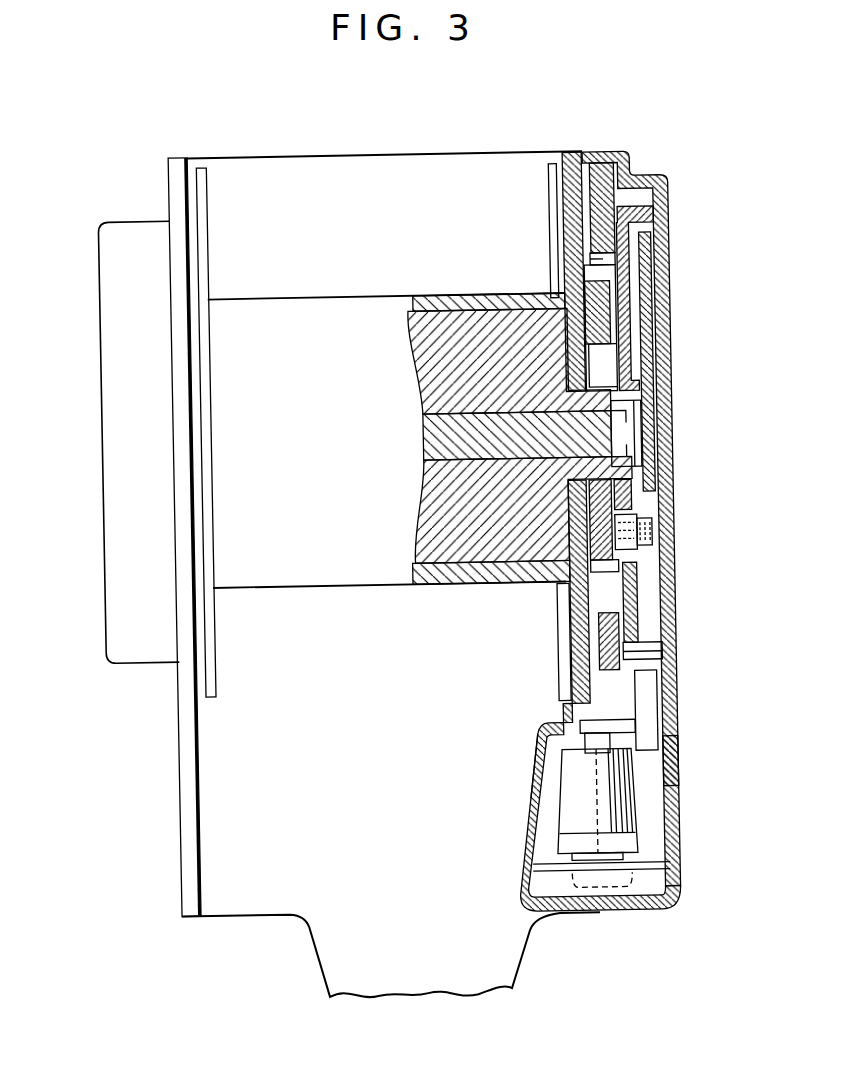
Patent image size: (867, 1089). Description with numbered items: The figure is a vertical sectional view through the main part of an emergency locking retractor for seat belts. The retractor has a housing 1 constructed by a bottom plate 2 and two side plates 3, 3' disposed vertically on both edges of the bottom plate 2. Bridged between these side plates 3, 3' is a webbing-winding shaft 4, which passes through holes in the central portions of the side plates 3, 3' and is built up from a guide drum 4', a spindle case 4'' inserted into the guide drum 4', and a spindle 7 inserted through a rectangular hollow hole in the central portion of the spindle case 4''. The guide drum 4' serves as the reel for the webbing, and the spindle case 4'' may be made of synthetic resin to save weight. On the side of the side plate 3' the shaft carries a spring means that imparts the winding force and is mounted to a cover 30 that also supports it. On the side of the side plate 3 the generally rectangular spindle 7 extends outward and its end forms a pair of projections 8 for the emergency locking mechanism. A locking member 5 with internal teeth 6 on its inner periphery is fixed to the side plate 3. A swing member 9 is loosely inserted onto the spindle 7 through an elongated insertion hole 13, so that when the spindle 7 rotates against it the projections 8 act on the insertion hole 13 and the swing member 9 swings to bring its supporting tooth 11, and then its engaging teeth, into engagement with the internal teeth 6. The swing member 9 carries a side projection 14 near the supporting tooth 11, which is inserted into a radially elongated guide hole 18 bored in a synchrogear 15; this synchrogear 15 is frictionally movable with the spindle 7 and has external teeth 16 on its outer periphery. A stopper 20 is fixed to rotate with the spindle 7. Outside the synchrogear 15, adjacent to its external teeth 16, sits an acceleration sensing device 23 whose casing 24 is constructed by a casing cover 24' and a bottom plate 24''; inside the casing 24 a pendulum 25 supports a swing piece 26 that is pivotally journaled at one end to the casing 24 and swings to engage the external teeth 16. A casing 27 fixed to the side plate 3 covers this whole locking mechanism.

The housing 1 is at (245, 152).
The bottom plate 2 is at (351, 153).
The side plate 3 is at (566, 252).
The side plate 3' is at (190, 405).
The webbing-winding shaft 4 is at (388, 419).
The guide drum 4' is at (488, 282).
The spindle case 4'' is at (509, 334).
The locking member 5 is at (612, 168).
The internal teeth 6 is at (600, 257).
The spindle 7 is at (592, 441).
The projections 8 is at (575, 535).
The swing member 9 is at (624, 306).
The supporting tooth 11 is at (572, 580).
The insertion hole 13 is at (616, 368).
The projection 14 is at (628, 532).
The synchrogear 15 is at (642, 604).
The external teeth 16 is at (648, 659).
The guide hole 18 is at (624, 577).
The stopper 20 is at (657, 401).
The acceleration sensing device 23 is at (656, 726).
The casing 24 is at (575, 806).
The casing cover 24' is at (509, 766).
The bottom plate 24'' is at (633, 870).
The pendulum 25 is at (627, 819).
The swing piece 26 is at (644, 700).
The casing 27 is at (663, 764).
The cover 30 is at (124, 242).